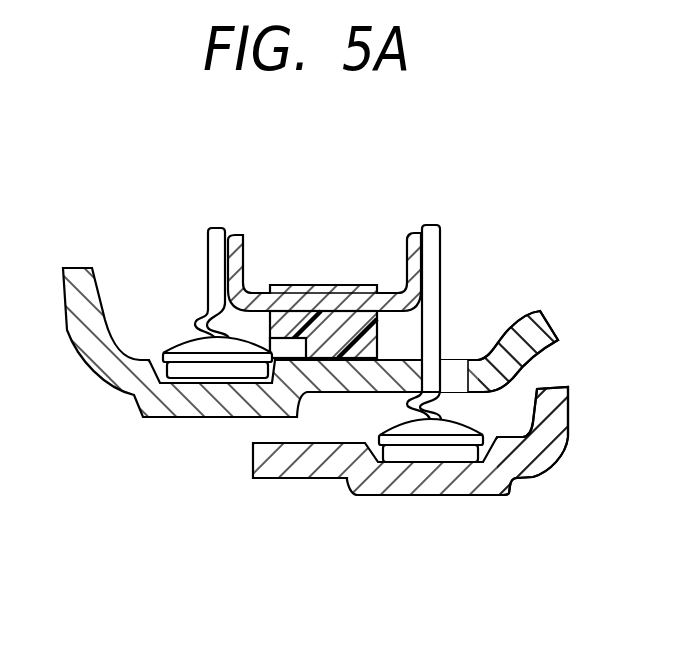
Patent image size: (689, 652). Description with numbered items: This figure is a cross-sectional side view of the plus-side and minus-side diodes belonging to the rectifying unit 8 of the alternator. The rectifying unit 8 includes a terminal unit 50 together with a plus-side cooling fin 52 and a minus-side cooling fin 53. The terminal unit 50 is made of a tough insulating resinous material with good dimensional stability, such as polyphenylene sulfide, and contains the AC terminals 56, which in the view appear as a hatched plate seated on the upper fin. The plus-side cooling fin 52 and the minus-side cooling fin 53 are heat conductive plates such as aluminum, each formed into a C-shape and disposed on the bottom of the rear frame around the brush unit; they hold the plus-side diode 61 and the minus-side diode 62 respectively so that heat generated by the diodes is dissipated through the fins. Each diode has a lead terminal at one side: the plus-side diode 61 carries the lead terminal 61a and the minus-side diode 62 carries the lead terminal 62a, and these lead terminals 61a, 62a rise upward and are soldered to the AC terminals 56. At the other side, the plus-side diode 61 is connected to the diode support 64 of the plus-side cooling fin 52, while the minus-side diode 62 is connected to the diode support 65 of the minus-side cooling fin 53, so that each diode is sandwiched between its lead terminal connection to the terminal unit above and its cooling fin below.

The rectifying unit 8 is at (87, 210).
The terminal unit 50 is at (341, 330).
The plus-side cooling fin 52 is at (535, 323).
The minus-side cooling fin 53 is at (553, 443).
The AC terminal 56 is at (250, 297).
The plus-side diode 61 is at (188, 348).
The lead terminal 61a is at (215, 232).
The minus-side diode 62 is at (460, 430).
The lead terminal 62a is at (430, 253).
The diode support 64 is at (220, 405).
The diode support 65 is at (440, 486).